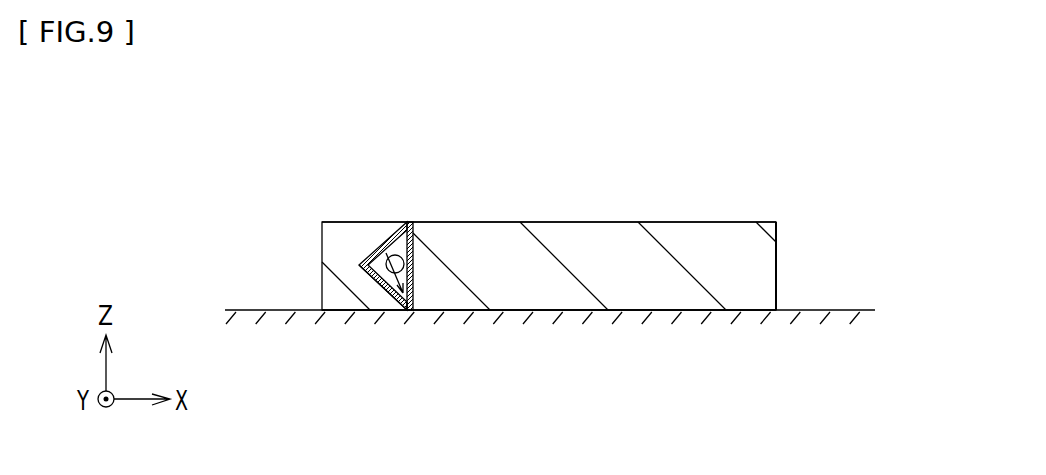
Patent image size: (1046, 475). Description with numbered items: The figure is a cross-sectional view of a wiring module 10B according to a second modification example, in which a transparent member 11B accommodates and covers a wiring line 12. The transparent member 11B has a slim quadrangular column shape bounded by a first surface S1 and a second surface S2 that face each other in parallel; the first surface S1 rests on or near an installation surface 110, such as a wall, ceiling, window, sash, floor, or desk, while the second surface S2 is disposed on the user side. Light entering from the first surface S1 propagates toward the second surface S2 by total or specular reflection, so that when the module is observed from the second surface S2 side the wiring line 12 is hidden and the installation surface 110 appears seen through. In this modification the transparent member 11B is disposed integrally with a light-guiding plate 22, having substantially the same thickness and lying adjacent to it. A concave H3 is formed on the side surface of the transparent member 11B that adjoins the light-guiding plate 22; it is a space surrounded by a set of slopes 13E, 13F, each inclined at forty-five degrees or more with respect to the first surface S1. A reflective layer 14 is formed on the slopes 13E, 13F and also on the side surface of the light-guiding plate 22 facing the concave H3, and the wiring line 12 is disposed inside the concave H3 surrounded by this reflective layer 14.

The wiring module 10B is at (690, 125).
The transparent member 11B is at (337, 267).
The wiring line 12 is at (417, 228).
The slope 13E is at (399, 245).
The slope 13F is at (385, 290).
The reflective layer 14 is at (382, 243).
The light-guiding plate 22 is at (667, 228).
The installation surface 110 is at (817, 309).
The first surface S1 is at (335, 312).
The second surface S2 is at (332, 222).
The concave H3 is at (410, 311).